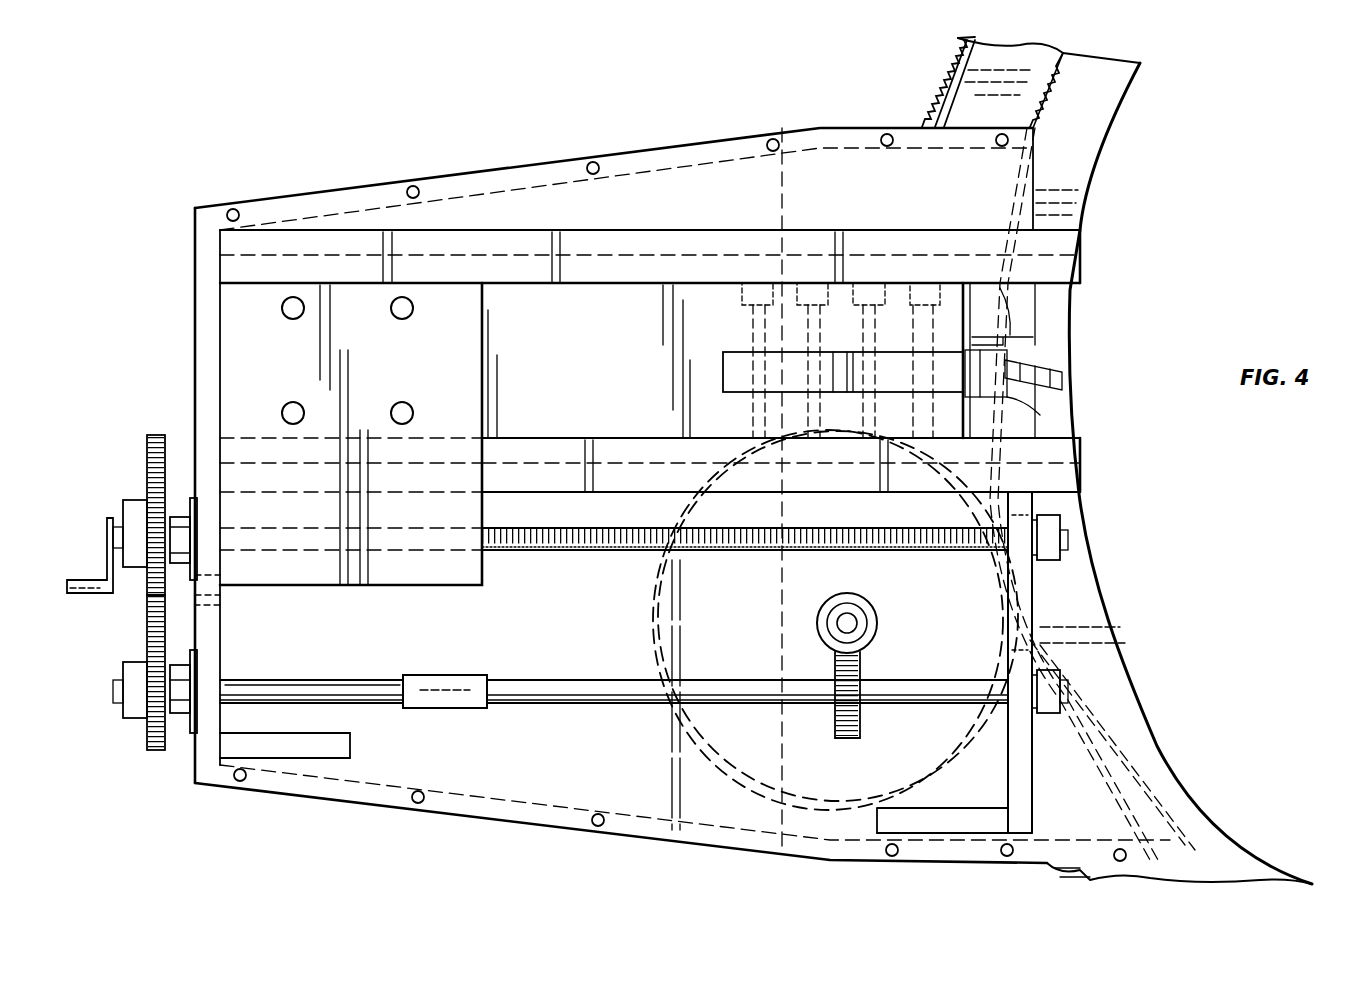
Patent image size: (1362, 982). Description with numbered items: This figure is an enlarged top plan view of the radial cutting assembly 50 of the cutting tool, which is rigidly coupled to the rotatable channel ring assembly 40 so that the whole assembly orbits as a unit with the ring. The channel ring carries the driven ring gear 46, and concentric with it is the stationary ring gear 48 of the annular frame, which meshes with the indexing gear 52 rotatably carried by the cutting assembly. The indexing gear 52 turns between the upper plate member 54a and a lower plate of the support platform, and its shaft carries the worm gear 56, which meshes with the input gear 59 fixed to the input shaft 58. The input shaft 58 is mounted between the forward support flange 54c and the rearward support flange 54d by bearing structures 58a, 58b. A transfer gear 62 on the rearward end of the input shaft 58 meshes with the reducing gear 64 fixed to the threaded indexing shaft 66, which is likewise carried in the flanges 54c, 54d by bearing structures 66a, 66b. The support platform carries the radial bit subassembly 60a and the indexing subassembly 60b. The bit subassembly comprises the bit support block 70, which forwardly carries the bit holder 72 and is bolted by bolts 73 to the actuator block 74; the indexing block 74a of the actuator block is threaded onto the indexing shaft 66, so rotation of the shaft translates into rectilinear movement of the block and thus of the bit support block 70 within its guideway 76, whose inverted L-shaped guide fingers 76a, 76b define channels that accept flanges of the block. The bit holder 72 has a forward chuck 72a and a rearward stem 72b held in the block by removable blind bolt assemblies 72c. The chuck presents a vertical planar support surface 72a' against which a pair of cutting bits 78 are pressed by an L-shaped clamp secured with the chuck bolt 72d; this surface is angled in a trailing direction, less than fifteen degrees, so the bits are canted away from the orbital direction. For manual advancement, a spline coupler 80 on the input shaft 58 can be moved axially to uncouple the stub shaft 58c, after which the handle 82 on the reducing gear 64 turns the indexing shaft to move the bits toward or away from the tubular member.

The channel ring assembly 40 is at (999, 113).
The driven ring gear 46 is at (920, 95).
The stationary ring gear 48 is at (1042, 50).
The radial cutting assembly 50 is at (577, 140).
The indexing gear 52 is at (685, 768).
The upper plate member 54a is at (560, 758).
The forward support flange 54c is at (1015, 610).
The rearward support flange 54d is at (213, 636).
The worm gear 56 is at (860, 600).
The input shaft 58 is at (542, 690).
The bearing structure 58a is at (1065, 680).
The bearing structure 58b is at (180, 735).
The stub shaft 58c is at (330, 690).
The input gear 59 is at (862, 738).
The radial bit subassembly 60a is at (708, 232).
The indexing subassembly 60b is at (145, 735).
The transfer gear 62 is at (147, 652).
The reducing gear 64 is at (147, 460).
The threaded indexing shaft 66 is at (578, 552).
The bearing structure 66a is at (1065, 530).
The bearing structure 66b is at (193, 498).
The bit support block 70 is at (618, 373).
The bit holder 72 is at (1008, 430).
The forward chuck 72a is at (1044, 369).
The vertical planar support surface 72a' is at (1069, 409).
The rearward stem 72b is at (745, 362).
The blind bolt assemblies 72c is at (768, 295).
The chuck bolt 72d is at (1000, 295).
The bolts 73 is at (290, 402).
The actuator block 74 is at (487, 343).
The indexing block 74a is at (397, 363).
The guideway 76 is at (520, 265).
The guide finger 76a is at (1083, 462).
The guide finger 76b is at (1083, 265).
The cutting bits 78 is at (1045, 385).
The spline coupler 80 is at (450, 681).
The handle 82 is at (90, 580).